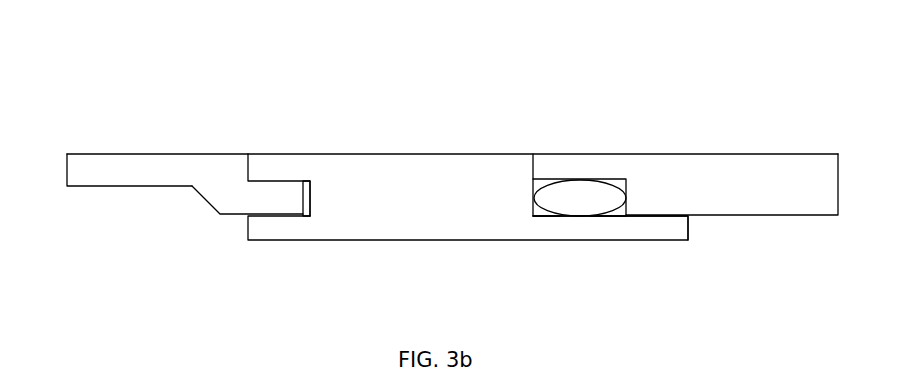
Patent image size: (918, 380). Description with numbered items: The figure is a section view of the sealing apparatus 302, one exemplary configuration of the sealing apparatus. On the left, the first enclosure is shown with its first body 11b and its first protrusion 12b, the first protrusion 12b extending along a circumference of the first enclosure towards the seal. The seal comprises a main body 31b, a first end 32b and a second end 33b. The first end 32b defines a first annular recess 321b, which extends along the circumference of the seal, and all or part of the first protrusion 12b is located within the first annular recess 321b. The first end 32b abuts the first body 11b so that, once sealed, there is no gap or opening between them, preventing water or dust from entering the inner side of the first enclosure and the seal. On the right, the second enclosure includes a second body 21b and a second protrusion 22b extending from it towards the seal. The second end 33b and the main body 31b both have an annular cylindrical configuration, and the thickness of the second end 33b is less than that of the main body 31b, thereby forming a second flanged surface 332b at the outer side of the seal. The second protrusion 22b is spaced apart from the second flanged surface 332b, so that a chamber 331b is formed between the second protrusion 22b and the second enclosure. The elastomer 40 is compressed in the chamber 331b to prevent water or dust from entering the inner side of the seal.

The sealing apparatus 302 is at (138, 60).
The first body 11b is at (123, 173).
The first protrusion 12b is at (275, 198).
The first end 32b is at (285, 168).
The main body 31b is at (423, 175).
The first annular recess 321b is at (307, 190).
The elastomer 40 is at (573, 203).
The second protrusion 22b is at (582, 167).
The second body 21b is at (695, 193).
The chamber 331b is at (538, 217).
The second flanged surface 332b is at (608, 218).
The second end 33b is at (655, 228).